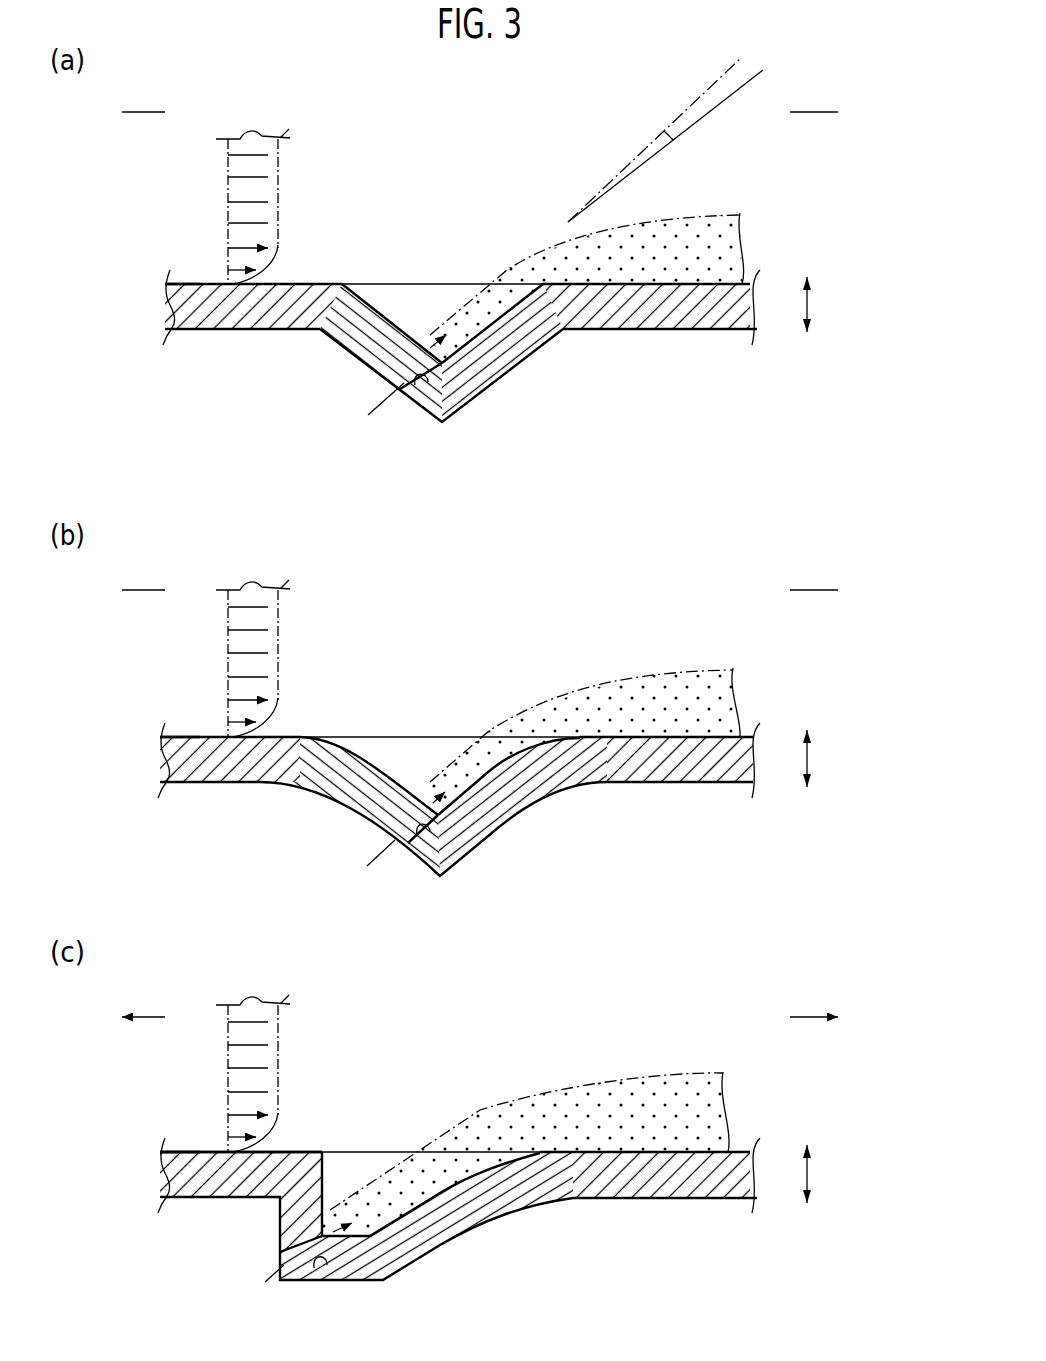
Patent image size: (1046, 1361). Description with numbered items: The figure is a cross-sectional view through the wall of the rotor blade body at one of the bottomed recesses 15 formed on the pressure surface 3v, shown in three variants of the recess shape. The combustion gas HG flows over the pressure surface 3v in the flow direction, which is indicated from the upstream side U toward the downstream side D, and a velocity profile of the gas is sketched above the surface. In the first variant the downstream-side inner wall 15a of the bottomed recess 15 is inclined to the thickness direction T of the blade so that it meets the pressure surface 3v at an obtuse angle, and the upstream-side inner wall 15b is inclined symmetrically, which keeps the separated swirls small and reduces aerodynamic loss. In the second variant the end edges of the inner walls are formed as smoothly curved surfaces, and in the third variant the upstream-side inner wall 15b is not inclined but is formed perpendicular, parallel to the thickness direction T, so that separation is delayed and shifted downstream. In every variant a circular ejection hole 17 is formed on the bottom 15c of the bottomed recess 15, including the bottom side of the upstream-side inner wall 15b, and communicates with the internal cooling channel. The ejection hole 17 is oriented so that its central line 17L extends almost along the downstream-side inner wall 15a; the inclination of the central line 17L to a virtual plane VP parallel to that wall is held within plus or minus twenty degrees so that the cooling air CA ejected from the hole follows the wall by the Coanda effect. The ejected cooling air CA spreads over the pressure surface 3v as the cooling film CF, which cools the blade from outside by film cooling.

The pressure surface 3v is at (183, 284).
The bottomed recess 15 is at (453, 295).
The downstream-side inner wall 15a is at (500, 323).
The upstream-side inner wall 15b is at (366, 292).
The bottom 15c is at (405, 342).
The ejection hole 17 is at (430, 382).
The central line 17L is at (682, 112).
The virtual plane VP is at (722, 108).
The combustion gas HG is at (280, 188).
The cooling film CF is at (708, 215).
The cooling air CA is at (376, 408).
The thickness direction T is at (822, 740).
The upstream direction U is at (130, 567).
The downstream direction D is at (827, 567).